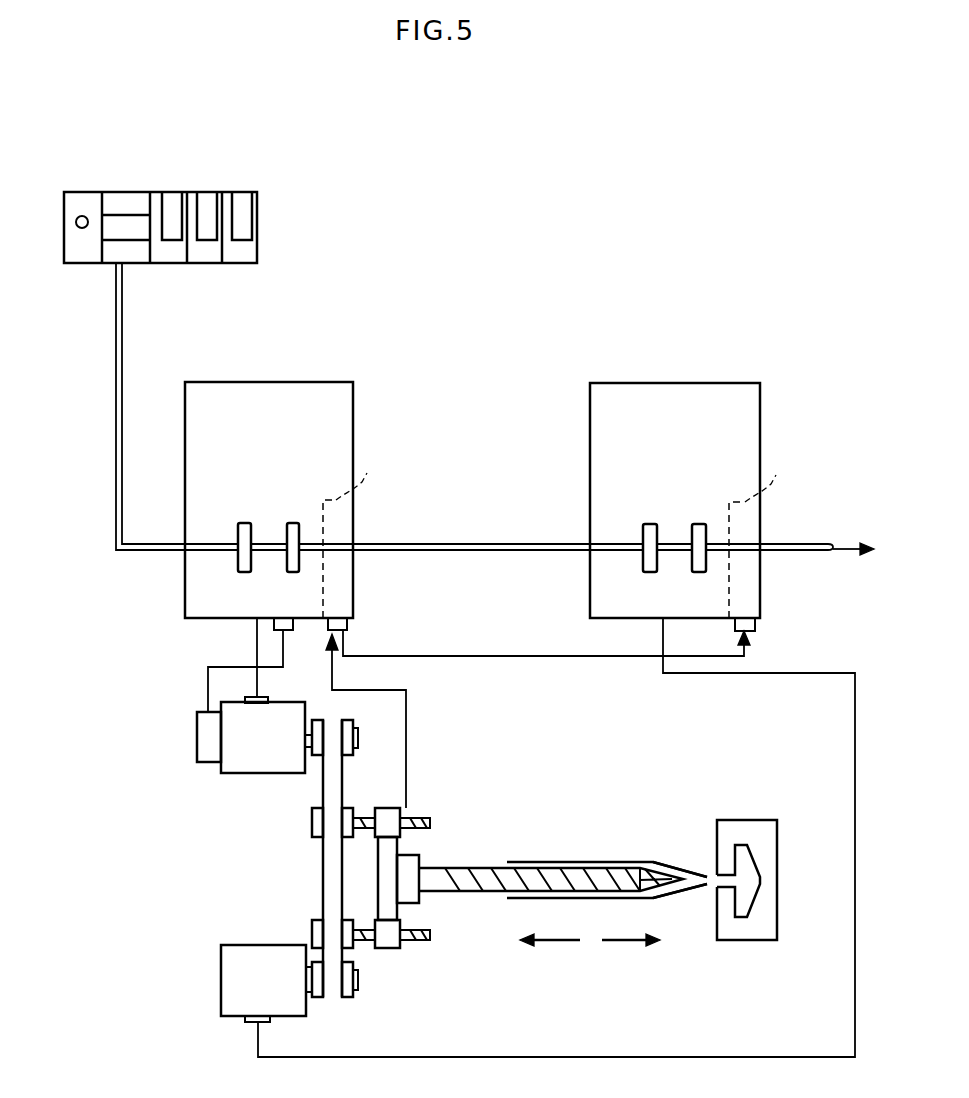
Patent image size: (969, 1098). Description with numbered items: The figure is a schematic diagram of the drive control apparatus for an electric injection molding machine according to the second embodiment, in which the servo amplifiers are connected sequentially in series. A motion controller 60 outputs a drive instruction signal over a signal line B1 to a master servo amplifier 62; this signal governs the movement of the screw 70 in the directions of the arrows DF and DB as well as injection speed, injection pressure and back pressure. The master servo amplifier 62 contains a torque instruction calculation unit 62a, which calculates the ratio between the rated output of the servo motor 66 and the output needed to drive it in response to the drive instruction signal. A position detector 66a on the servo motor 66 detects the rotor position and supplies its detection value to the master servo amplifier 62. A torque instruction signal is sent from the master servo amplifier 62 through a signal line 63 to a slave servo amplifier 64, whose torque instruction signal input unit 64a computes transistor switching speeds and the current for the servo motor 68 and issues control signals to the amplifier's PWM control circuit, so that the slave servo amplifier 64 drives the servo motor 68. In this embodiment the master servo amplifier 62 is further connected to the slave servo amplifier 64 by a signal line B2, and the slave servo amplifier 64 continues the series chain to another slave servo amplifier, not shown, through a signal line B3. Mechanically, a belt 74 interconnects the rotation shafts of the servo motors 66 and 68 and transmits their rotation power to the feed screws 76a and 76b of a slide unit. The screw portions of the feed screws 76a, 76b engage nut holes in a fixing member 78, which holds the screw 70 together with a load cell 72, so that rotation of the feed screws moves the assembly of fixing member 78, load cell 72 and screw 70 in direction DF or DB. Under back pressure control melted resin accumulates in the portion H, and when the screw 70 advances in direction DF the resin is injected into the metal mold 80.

The motion controller 60 is at (203, 192).
The signal line B1 is at (116, 405).
The master servo amplifier 62 is at (323, 385).
The torque instruction calculation unit 62a is at (365, 530).
The signal line B2 is at (475, 543).
The slave servo amplifier 64 is at (731, 386).
The torque instruction signal input unit 64a is at (773, 530).
The signal line B3 is at (810, 543).
The signal line 63 is at (519, 655).
The servo motor 66 is at (261, 775).
The position detector 66a is at (197, 737).
The servo motor 68 is at (251, 945).
The screw 70 is at (490, 862).
The load cell 72 is at (419, 855).
The belt 74 is at (344, 783).
The feed screw 76a is at (428, 814).
The feed screw 76b is at (425, 950).
The fixing member 78 is at (389, 950).
The metal mold 80 is at (761, 820).
The portion H is at (694, 876).
The direction DB is at (558, 944).
The direction DF is at (626, 944).